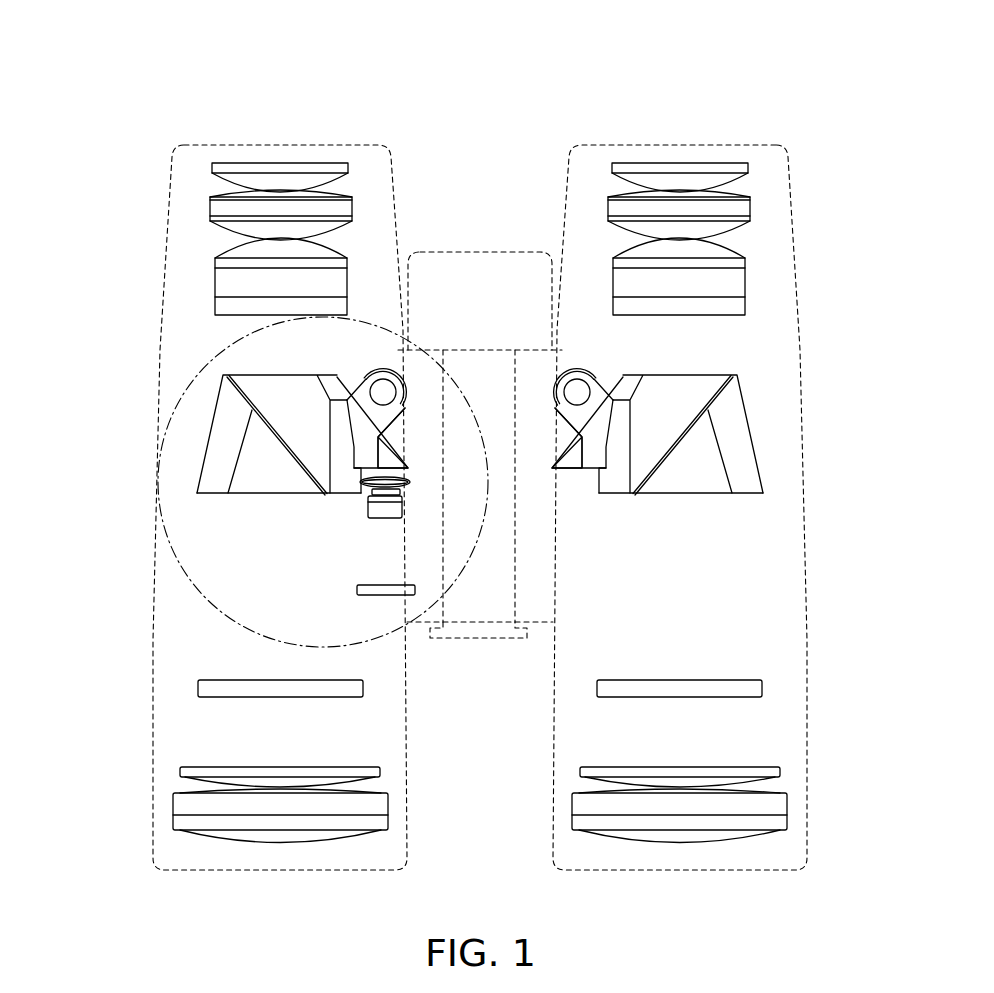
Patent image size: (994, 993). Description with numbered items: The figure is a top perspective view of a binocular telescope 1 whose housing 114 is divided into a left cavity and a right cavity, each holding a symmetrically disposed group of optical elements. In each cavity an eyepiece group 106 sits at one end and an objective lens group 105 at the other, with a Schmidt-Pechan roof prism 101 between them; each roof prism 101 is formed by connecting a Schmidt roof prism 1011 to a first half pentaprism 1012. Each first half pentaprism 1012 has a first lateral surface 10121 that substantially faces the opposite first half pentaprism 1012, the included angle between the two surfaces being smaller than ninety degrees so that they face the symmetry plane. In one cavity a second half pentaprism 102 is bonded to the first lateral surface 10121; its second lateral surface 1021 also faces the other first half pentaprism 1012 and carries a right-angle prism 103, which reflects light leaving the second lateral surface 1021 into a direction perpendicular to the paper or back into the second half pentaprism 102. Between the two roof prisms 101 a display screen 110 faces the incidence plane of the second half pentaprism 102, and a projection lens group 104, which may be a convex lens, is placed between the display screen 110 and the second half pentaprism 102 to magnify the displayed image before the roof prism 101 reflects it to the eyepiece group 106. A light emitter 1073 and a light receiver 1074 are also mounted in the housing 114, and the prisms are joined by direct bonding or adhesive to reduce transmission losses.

The binocular telescope 1 is at (73, 92).
The Schmidt-Pechan roof prism 101 is at (215, 360).
The Schmidt roof prism 1011 is at (218, 484).
The first half pentaprism 1012 is at (378, 398).
The first lateral surface 10121 is at (343, 370).
The second half pentaprism 102 is at (303, 477).
The second lateral surface 1021 is at (405, 442).
The right-angle prism 103 is at (362, 450).
The projection lens group 104 is at (352, 511).
The objective lens group 105 is at (190, 669).
The eyepiece group 106 is at (198, 244).
The light emitter 1073 is at (380, 425).
The light receiver 1074 is at (580, 425).
The display screen 110 is at (356, 590).
The housing 114 is at (178, 876).